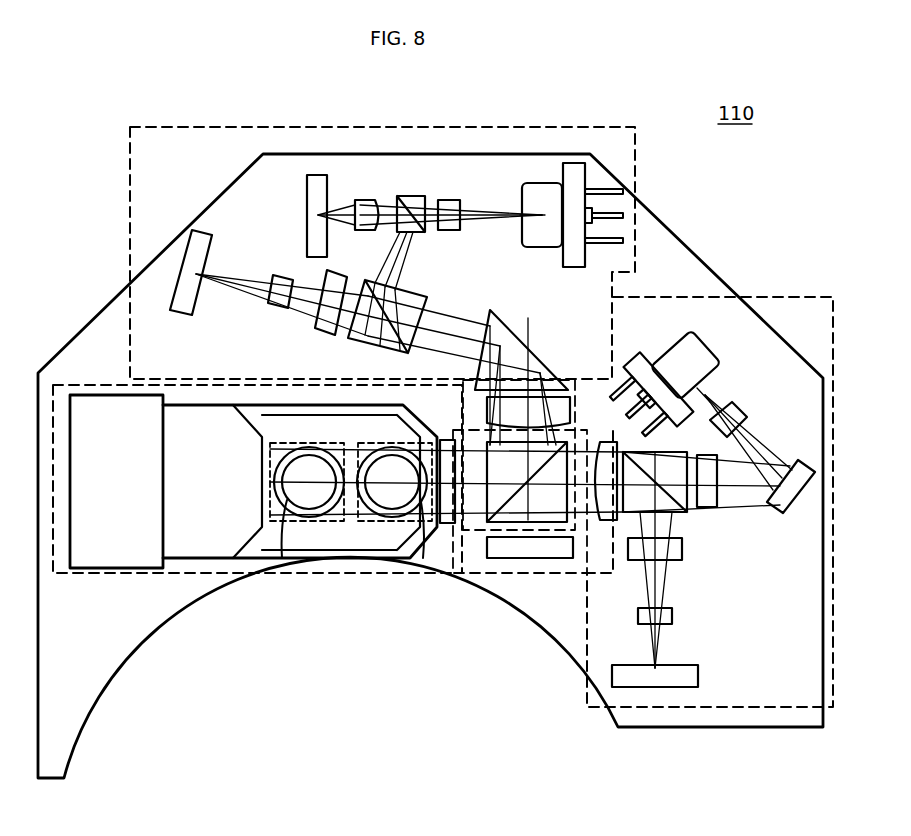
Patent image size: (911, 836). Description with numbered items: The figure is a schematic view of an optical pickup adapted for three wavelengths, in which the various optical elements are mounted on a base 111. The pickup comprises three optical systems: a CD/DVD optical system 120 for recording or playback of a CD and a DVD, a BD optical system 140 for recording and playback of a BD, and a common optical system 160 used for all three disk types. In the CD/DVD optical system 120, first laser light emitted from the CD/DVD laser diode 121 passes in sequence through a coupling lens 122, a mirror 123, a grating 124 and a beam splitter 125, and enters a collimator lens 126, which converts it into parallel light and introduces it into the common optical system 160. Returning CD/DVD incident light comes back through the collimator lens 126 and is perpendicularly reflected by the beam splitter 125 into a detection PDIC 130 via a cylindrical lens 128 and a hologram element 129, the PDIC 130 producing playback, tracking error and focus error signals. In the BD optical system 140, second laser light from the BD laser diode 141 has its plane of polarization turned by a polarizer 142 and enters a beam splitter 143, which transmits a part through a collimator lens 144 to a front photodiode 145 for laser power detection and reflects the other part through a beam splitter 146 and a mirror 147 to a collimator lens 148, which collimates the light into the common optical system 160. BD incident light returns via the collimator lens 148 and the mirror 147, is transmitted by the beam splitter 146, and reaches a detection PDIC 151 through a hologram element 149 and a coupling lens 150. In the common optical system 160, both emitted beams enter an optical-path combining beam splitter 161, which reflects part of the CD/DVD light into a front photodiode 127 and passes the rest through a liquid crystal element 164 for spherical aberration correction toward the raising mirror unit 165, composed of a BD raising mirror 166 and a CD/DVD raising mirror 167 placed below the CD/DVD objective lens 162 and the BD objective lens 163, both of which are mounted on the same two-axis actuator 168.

The base 111 is at (70, 738).
The CD/DVD optical system 120 is at (588, 708).
The CD/DVD laser diode 121 is at (718, 378).
The coupling lens 122 is at (736, 414).
The mirror 123 is at (792, 466).
The grating 124 is at (716, 503).
The beam splitter 125 is at (640, 455).
The collimator lens 126 is at (607, 520).
The front photodiode 127 is at (545, 558).
The cylindrical lens 128 is at (684, 549).
The hologram element 129 is at (672, 615).
The detection PDIC 130 is at (698, 676).
The BD optical system 140 is at (176, 127).
The BD laser diode 141 is at (530, 200).
The polarizer 142 is at (450, 204).
The beam splitter 143 is at (410, 196).
The collimator lens 144 is at (364, 202).
The front photodiode 145 is at (308, 200).
The beam splitter 146 is at (363, 330).
The mirror 147 is at (535, 364).
The collimator lens 148 is at (564, 405).
The hologram element 149 is at (325, 328).
The coupling lens 150 is at (275, 305).
The detection PDIC 151 is at (183, 312).
The common optical system 160 is at (180, 573).
The optical-path combining beam splitter 161 is at (487, 522).
The CD/DVD objective lens 162 is at (288, 558).
The BD objective lens 163 is at (428, 547).
The liquid crystal element 164 is at (445, 440).
The raising mirror unit 165 is at (392, 612).
The BD raising mirror 166 is at (330, 522).
The CD/DVD raising mirror 167 is at (380, 522).
The two-axis actuator 168 is at (113, 568).